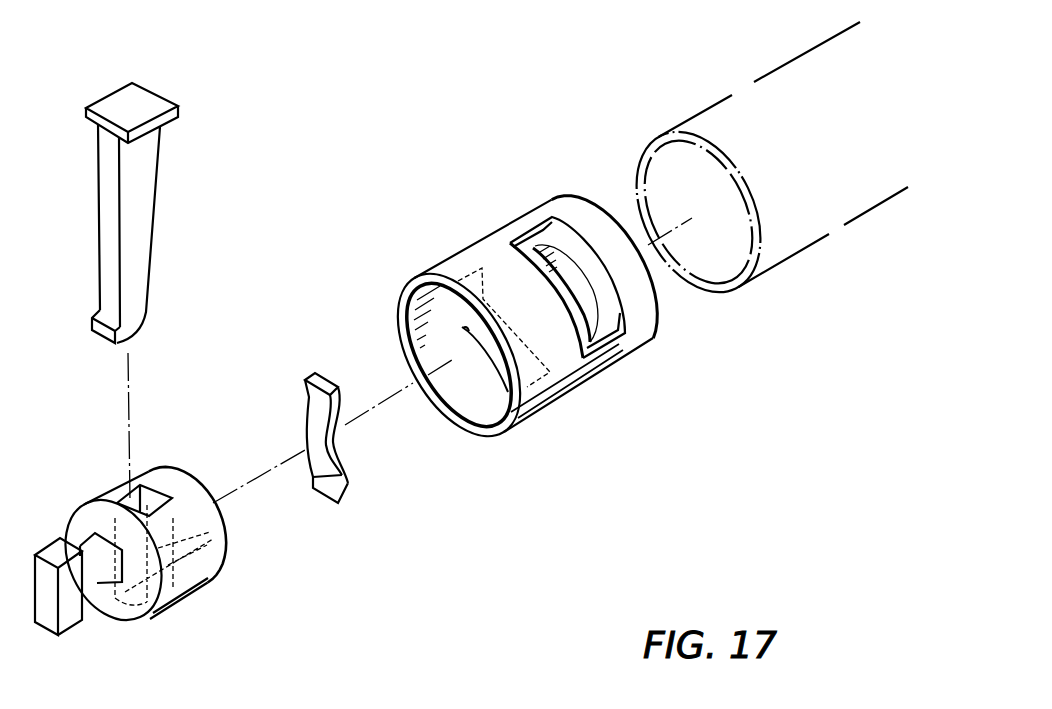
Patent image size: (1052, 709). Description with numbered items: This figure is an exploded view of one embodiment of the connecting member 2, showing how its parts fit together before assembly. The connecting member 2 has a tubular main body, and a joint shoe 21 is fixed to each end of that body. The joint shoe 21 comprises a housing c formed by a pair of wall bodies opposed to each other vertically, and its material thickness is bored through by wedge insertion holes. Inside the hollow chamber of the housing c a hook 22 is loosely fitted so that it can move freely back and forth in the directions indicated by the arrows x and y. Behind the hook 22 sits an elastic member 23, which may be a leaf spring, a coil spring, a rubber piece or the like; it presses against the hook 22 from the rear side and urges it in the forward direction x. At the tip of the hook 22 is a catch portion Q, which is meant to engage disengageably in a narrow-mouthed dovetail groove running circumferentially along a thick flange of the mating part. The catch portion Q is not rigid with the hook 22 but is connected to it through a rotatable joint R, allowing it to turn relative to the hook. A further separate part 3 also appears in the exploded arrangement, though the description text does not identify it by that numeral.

The connecting member 2 is at (681, 113).
The key 3 is at (186, 104).
The joint shoe 21 is at (583, 369).
The hook 22 is at (219, 600).
The elastic member 23 is at (340, 457).
The direction x is at (613, 313).
The direction y is at (463, 328).
The housing c is at (549, 412).
The catch portion Q is at (77, 627).
The rotatable joint R is at (98, 583).